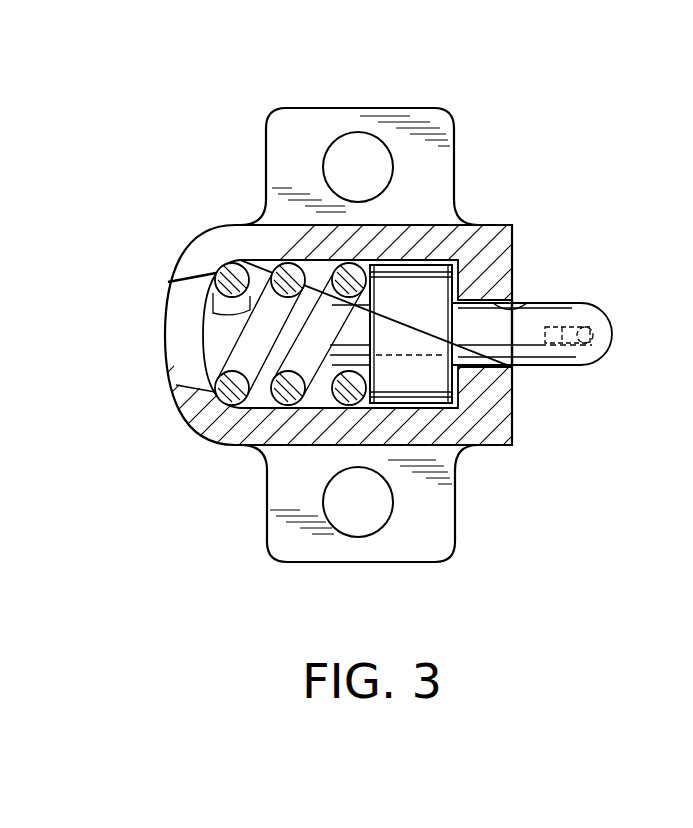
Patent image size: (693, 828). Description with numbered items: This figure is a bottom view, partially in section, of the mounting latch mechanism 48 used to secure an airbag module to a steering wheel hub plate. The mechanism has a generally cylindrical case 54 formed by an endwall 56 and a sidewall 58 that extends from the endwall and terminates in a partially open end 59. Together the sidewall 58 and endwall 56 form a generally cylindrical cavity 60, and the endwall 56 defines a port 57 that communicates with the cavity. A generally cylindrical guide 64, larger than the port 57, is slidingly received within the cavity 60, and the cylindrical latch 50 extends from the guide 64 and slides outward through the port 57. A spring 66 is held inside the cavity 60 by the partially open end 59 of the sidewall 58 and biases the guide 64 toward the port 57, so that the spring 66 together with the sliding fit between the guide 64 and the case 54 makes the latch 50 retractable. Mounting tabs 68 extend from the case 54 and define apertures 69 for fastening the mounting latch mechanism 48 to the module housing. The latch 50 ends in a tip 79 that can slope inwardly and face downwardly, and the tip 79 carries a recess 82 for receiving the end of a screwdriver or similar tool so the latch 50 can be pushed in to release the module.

The mounting latch mechanism 48 is at (494, 145).
The latch 50 is at (562, 306).
The case 54 is at (232, 218).
The endwall 56 is at (513, 392).
The port 57 is at (527, 307).
The sidewall 58 is at (297, 444).
The partially open end 59 is at (182, 382).
The cavity 60 is at (190, 405).
The guide 64 is at (437, 407).
The spring 66 is at (248, 338).
The mounting tabs 68 is at (395, 108).
The apertures 69 is at (333, 168).
The tip 79 is at (603, 314).
The recess 82 is at (592, 338).